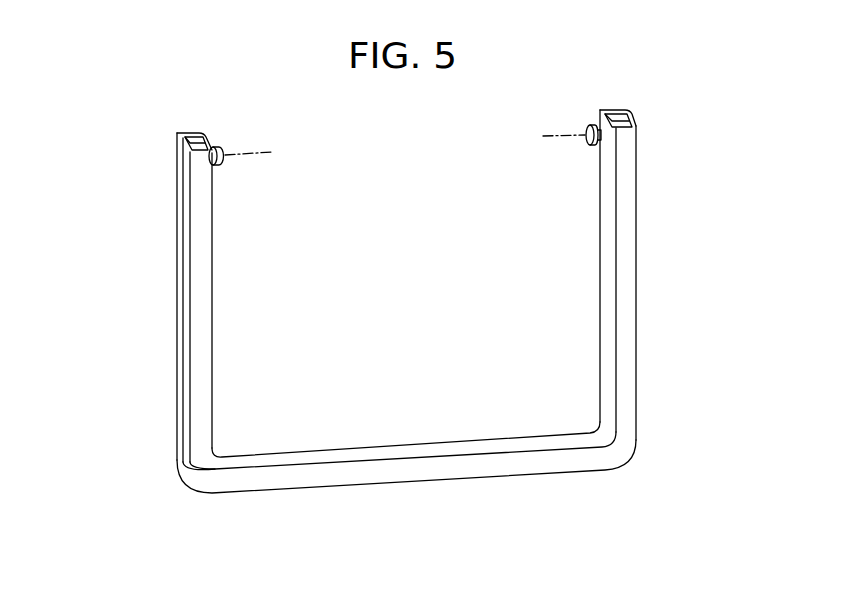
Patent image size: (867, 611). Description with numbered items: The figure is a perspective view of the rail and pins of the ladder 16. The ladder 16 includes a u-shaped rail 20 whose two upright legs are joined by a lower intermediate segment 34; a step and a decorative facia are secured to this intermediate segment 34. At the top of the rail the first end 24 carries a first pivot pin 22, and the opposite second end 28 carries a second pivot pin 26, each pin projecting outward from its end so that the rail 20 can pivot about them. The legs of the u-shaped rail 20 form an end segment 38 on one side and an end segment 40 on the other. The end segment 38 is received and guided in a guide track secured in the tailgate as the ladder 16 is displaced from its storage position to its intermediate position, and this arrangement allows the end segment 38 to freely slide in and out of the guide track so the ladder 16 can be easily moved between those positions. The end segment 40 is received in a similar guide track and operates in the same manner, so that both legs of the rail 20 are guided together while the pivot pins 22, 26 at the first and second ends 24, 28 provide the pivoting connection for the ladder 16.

The ladder 16 is at (128, 480).
The u-shaped rail 20 is at (207, 458).
The first pivot pin 22 is at (222, 148).
The first end 24 is at (186, 133).
The second pivot pin 26 is at (590, 142).
The second end 28 is at (616, 110).
The intermediate segment 34 is at (412, 452).
The end segment 38 is at (186, 273).
The end segment 40 is at (627, 258).